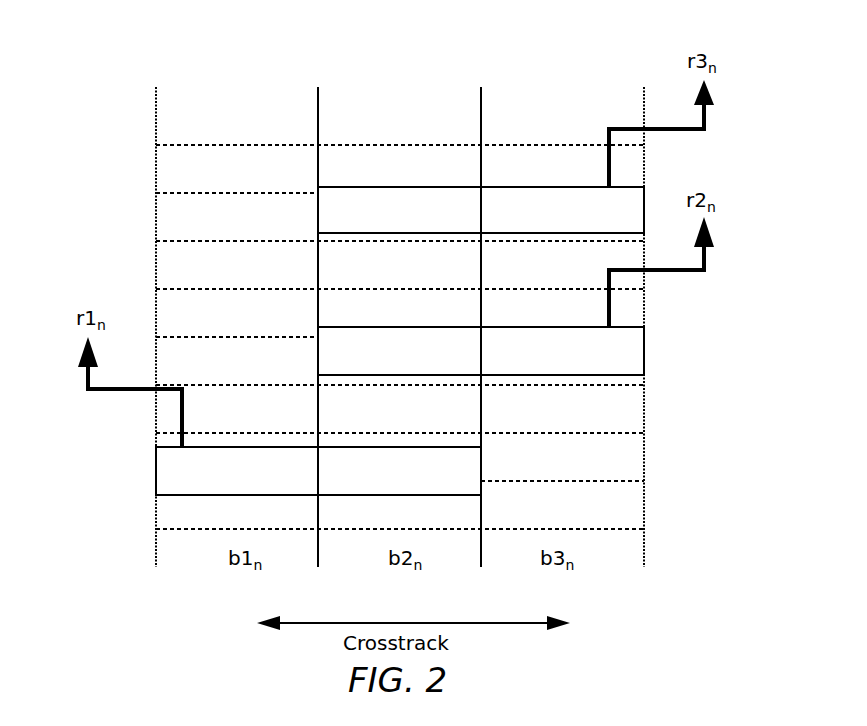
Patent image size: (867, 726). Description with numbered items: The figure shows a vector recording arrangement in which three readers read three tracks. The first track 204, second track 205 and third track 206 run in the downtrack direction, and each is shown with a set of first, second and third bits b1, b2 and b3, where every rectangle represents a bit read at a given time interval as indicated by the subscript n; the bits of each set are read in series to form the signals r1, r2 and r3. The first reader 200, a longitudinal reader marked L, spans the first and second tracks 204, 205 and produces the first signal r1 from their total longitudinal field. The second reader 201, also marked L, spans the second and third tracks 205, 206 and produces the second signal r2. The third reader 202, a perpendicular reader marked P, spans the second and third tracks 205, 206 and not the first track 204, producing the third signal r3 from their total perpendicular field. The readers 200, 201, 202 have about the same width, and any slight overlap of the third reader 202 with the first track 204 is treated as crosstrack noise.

The first reader 200 is at (156, 476).
The second reader 201 is at (318, 364).
The third reader 202 is at (318, 224).
The first track 204 is at (233, 100).
The second track 205 is at (399, 100).
The third track 206 is at (571, 102).